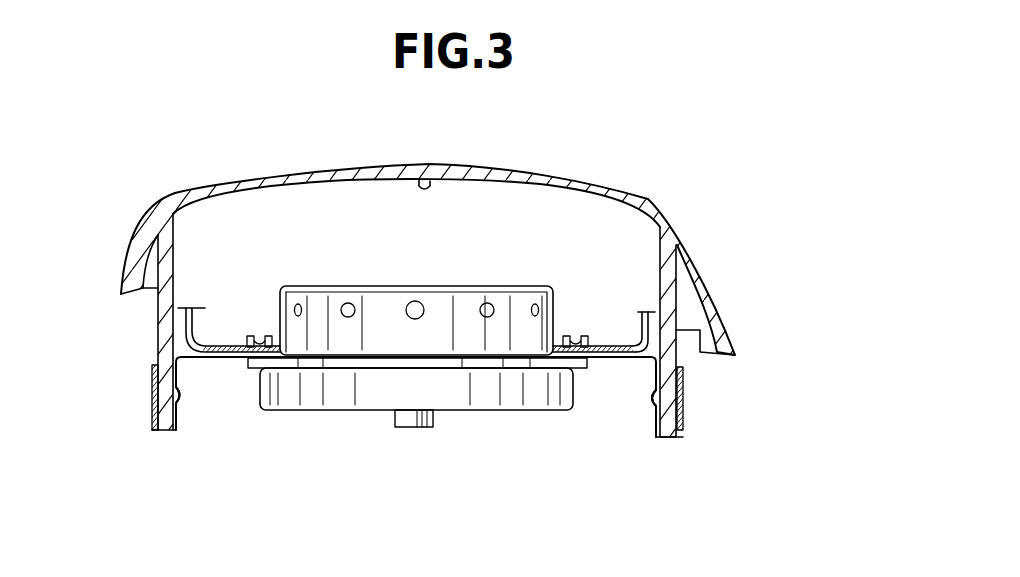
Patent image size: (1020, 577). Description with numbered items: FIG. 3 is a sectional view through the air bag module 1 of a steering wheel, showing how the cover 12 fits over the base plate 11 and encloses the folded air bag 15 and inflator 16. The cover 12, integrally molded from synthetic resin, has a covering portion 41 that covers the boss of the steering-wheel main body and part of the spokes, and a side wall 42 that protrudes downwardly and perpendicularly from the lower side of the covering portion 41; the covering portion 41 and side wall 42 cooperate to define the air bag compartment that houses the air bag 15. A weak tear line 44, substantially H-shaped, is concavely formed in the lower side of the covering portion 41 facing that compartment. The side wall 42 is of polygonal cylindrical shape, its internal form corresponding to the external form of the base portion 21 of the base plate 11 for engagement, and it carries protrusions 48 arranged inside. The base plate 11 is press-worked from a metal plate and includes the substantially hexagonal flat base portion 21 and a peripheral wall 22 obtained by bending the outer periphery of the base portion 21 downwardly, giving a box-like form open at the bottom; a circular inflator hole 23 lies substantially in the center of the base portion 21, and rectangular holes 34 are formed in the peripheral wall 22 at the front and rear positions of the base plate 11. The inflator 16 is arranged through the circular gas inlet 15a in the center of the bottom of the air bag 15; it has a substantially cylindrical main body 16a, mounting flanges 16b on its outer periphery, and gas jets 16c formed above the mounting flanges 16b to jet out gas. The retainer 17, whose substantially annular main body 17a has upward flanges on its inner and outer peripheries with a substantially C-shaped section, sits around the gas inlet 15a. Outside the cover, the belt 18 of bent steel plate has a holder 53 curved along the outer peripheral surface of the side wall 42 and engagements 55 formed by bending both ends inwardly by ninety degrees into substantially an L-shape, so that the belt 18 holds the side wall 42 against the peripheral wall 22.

The lamp assembly 1 is at (668, 150).
The base plate 11 is at (600, 382).
The cover 12 is at (580, 183).
The air bag 15 is at (634, 338).
The gas inlet 15a is at (560, 335).
The inflator 16 is at (508, 300).
The main body 16a is at (387, 288).
The mounting flange 16b is at (344, 361).
The gas jets 16c is at (425, 297).
The retainer 17 is at (579, 337).
The main body 17a is at (258, 334).
The belt 18 is at (678, 381).
The base portion 21 is at (623, 364).
The peripheral wall 22 is at (655, 441).
The inflator hole 23 is at (293, 362).
The rectangular holes 34 is at (179, 407).
The covering portion 41 is at (500, 172).
The side wall 42 is at (670, 293).
The tear line 44 is at (430, 174).
The protrusions 48 is at (182, 393).
The holder 53 is at (680, 400).
The engagements 55 is at (681, 421).